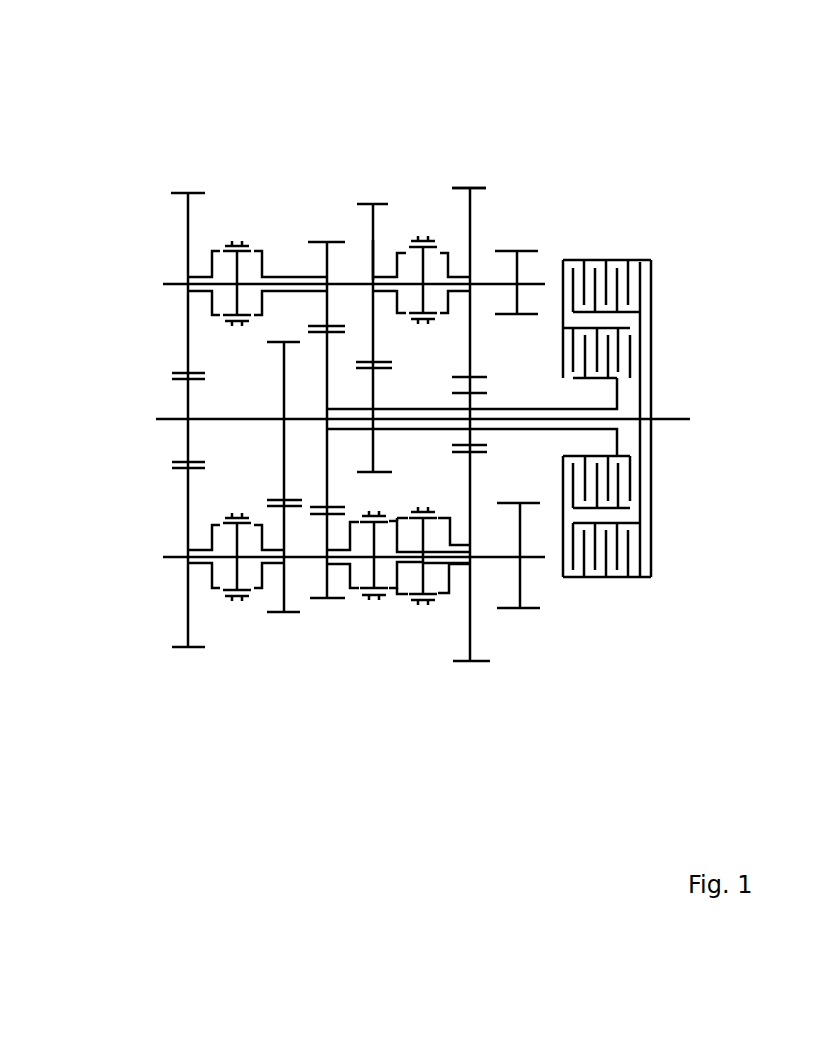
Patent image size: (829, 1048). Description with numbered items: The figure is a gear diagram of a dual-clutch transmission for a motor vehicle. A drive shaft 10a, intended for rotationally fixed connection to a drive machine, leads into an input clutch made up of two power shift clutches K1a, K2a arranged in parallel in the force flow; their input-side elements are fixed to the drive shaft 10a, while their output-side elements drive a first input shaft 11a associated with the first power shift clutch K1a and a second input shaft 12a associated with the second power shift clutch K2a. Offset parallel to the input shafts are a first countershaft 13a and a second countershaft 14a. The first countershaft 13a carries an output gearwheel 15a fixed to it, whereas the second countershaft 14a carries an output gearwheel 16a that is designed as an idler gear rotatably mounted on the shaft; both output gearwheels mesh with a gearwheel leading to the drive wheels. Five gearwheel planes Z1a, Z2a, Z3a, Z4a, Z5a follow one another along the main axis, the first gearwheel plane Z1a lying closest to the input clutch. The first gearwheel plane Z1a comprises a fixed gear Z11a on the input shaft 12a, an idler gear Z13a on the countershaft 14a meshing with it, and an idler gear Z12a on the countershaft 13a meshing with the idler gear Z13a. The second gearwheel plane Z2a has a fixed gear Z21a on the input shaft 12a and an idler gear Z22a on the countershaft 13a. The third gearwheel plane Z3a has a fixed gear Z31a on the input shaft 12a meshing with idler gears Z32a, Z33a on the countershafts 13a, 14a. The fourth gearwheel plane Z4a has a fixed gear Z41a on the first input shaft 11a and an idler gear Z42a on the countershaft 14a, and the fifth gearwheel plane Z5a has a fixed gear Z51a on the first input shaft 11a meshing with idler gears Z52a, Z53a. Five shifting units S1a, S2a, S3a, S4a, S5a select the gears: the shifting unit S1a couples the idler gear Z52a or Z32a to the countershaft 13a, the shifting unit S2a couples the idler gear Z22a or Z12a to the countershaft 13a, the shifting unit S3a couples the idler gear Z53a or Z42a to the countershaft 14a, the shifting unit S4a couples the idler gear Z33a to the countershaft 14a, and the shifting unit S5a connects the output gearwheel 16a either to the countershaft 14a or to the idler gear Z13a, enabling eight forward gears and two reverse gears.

The drive shaft 10a is at (675, 419).
The first input shaft 11a is at (628, 421).
The second input shaft 12a is at (547, 430).
The first countershaft 13a is at (181, 277).
The second countershaft 14a is at (175, 556).
The output gearwheel 15a is at (520, 268).
The output gearwheel 16a is at (525, 582).
The first power shift clutch K1a is at (641, 243).
The second power shift clutch K2a is at (598, 310).
The first gearwheel plane Z1a is at (470, 223).
The second gearwheel plane Z2a is at (373, 177).
The third gearwheel plane Z3a is at (324, 209).
The fourth gearwheel plane Z4a is at (282, 211).
The fifth gearwheel plane Z5a is at (186, 171).
The fixed gear Z11a is at (470, 435).
The idler gear Z12a is at (469, 164).
The idler gear Z13a is at (470, 627).
The fixed gear Z21a is at (375, 455).
The idler gear Z22a is at (373, 258).
The fixed gear Z31a is at (327, 480).
The idler gear Z32a is at (327, 258).
The idler gear Z33a is at (327, 567).
The fixed gear Z41a is at (283, 437).
The idler gear Z42a is at (284, 588).
The fixed gear Z51a is at (188, 437).
The idler gear Z52a is at (188, 338).
The idler gear Z53a is at (188, 622).
The shifting unit S1a is at (238, 217).
The shifting unit S2a is at (424, 216).
The shifting unit S3a is at (238, 625).
The shifting unit S4a is at (374, 627).
The shifting unit S5a is at (421, 627).